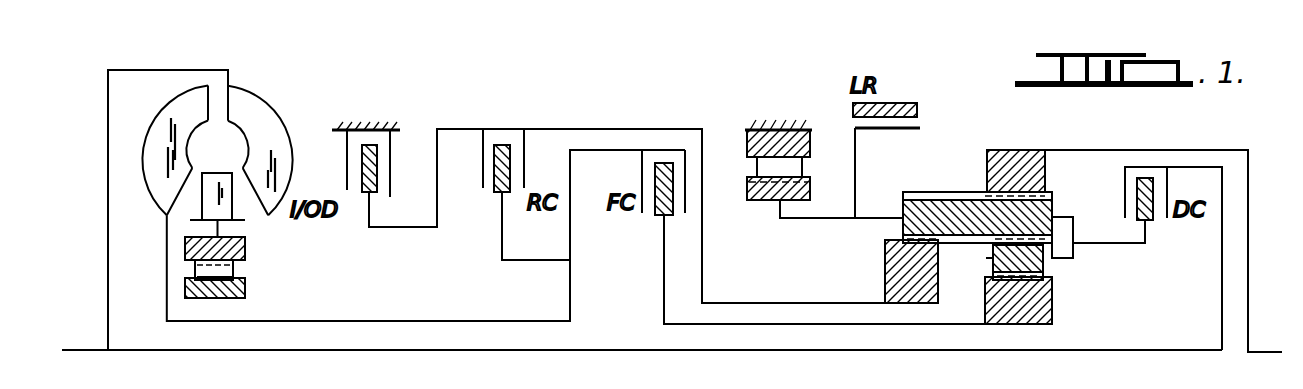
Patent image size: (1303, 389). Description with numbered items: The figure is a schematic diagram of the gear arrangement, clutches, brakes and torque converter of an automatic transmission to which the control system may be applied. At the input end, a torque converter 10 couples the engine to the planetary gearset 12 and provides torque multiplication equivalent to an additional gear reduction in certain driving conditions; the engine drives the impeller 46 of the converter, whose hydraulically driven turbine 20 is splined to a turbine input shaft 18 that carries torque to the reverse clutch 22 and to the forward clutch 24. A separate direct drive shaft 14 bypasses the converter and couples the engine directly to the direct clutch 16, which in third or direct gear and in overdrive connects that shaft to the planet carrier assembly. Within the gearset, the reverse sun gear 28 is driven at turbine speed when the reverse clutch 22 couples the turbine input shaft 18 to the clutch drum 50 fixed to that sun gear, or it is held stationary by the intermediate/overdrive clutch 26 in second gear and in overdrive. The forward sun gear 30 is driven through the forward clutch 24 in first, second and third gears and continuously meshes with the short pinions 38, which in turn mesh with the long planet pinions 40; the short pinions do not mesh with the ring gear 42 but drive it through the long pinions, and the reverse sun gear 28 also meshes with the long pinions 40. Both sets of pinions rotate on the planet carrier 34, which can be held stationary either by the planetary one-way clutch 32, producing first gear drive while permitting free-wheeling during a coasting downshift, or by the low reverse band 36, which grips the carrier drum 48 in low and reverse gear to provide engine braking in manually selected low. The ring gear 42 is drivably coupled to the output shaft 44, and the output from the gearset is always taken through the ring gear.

The torque converter 10 is at (268, 93).
The planetary gearset 12 is at (974, 215).
The direct drive shaft 14 is at (122, 347).
The direct clutch 16 is at (1152, 220).
The turbine input shaft 18 is at (258, 320).
The turbine 20 is at (160, 153).
The reverse clutch 22 is at (510, 147).
The forward clutch 24 is at (667, 165).
The intermediate/overdrive clutch 26 is at (377, 147).
The reverse sun gear 28 is at (887, 268).
The forward sun gear 30 is at (1047, 300).
The planetary one-way clutch 32 is at (783, 132).
The planet carrier 34 is at (1075, 214).
The low reverse band 36 is at (903, 103).
The short pinions 38 is at (1043, 268).
The long planet pinions 40 is at (903, 197).
The ring gear 42 is at (1022, 158).
The output shaft 44 is at (1262, 350).
The impeller 46 is at (270, 135).
The carrier drum 48 is at (920, 127).
The clutch drum 50 is at (593, 130).